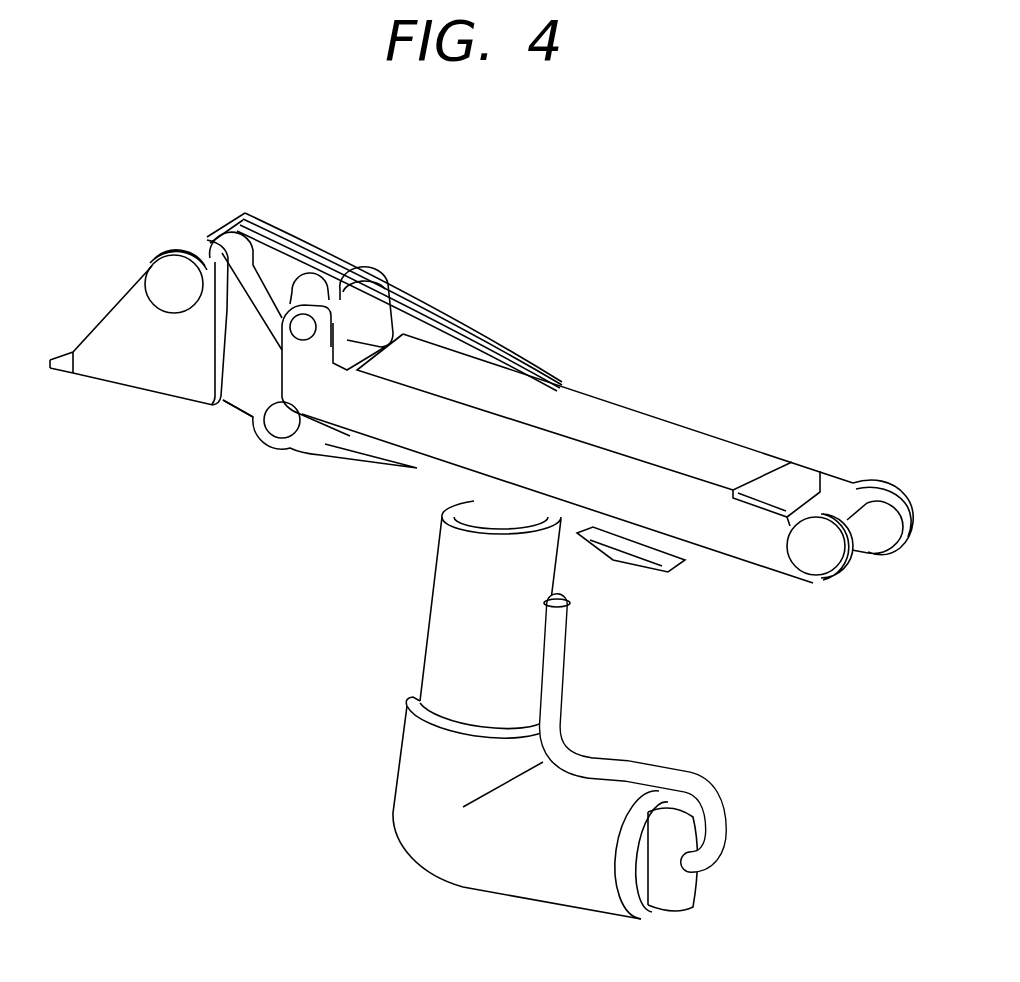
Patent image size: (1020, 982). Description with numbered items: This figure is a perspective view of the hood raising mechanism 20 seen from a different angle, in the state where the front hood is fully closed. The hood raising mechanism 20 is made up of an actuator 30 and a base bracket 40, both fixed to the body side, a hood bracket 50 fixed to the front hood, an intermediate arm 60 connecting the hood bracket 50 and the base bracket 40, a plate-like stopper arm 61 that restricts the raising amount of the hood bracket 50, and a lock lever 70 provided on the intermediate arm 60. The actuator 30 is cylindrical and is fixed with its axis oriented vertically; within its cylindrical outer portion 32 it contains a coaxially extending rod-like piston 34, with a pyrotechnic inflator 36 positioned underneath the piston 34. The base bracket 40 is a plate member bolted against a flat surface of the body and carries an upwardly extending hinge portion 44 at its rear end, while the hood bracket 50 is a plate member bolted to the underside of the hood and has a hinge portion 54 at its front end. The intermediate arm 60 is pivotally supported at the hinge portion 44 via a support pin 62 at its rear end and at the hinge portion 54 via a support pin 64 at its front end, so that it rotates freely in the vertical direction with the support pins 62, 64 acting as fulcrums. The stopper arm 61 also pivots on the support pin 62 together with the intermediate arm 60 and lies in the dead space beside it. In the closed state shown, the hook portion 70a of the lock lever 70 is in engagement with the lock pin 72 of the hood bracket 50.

The hood raising mechanism 20 is at (401, 241).
The actuator 30 is at (433, 628).
The cylindrical outer portion 32 is at (500, 648).
The piston 34 is at (477, 502).
The pyrotechnic inflator 36 is at (483, 860).
The base bracket 40 is at (197, 393).
The hinge portion 44 is at (117, 337).
The hood bracket 50 is at (672, 447).
The hinge portion 54 is at (780, 557).
The intermediate arm 60 is at (360, 440).
The stopper arm 61 is at (443, 328).
The support pin 62 is at (170, 272).
The support pin 64 is at (820, 557).
The lock lever 70 is at (405, 328).
The hook portion 70a is at (313, 290).
The lock pin 72 is at (367, 294).